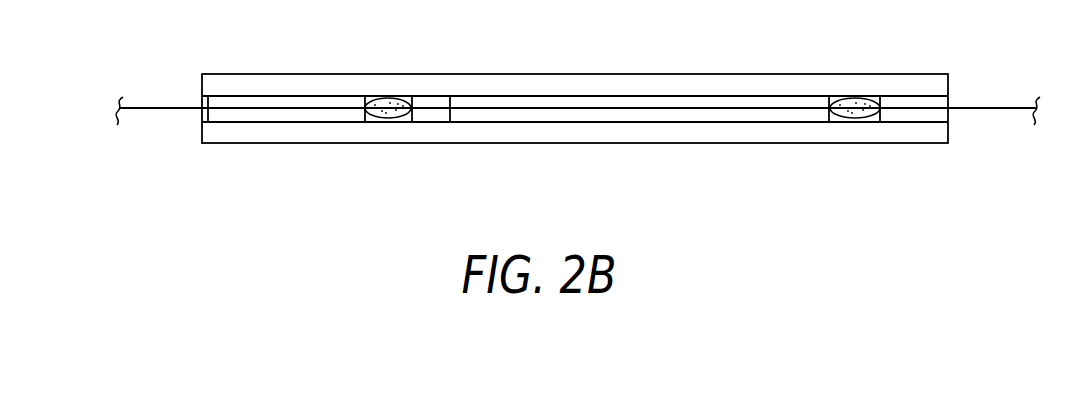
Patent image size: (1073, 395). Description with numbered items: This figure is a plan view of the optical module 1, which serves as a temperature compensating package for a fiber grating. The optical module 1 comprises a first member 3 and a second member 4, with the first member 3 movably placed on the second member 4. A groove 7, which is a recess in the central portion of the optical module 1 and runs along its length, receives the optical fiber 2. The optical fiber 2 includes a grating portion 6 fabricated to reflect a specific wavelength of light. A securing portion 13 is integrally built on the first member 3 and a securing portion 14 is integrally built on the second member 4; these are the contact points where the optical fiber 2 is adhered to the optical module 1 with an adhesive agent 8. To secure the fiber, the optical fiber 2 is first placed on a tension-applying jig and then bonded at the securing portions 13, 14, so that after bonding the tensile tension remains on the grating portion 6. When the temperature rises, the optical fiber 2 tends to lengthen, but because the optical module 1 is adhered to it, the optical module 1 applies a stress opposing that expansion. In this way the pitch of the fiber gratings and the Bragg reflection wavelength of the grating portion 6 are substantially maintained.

The optical module 1 is at (576, 166).
The optical fiber 2 is at (168, 108).
The first member 3 is at (268, 112).
The second member 4 is at (643, 116).
The grating portion 6 is at (547, 107).
The groove 7 is at (507, 116).
The adhesive agent 8 is at (377, 116).
The securing portion 13 is at (413, 117).
The securing portion 14 is at (880, 117).